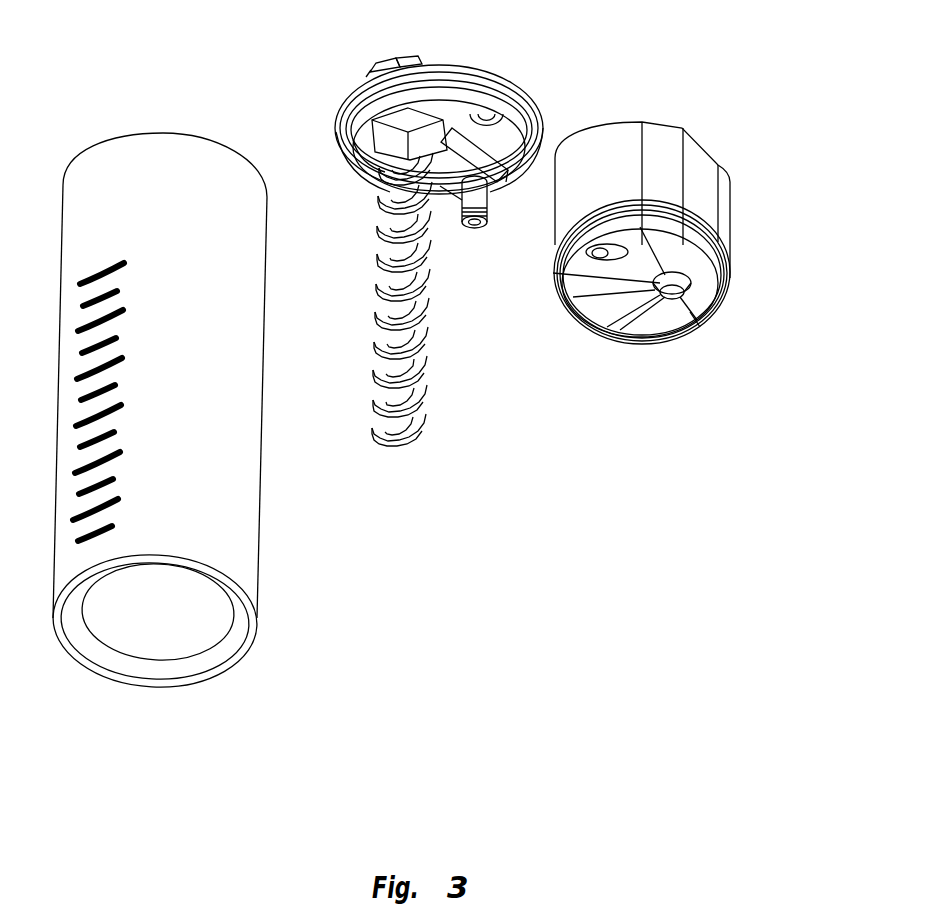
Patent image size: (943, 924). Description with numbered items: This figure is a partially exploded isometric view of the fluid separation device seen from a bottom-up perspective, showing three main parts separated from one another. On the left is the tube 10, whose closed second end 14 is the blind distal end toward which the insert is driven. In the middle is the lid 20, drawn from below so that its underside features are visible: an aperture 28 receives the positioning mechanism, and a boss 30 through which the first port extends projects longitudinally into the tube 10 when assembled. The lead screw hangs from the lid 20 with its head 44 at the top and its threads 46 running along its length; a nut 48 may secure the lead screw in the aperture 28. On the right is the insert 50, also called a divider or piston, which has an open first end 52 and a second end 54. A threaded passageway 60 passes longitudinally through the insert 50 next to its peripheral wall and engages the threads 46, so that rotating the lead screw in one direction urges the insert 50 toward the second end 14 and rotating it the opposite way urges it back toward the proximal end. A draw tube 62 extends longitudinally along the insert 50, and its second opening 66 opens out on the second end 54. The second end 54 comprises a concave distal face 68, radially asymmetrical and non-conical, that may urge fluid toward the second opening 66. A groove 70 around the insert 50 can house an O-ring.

The tube 10 is at (187, 723).
The second end 14 is at (193, 620).
The lid 20 is at (487, 78).
The aperture 28 is at (503, 128).
The boss 30 is at (488, 203).
The head 44 is at (396, 60).
The threads 46 is at (415, 357).
The nut 48 is at (375, 140).
The insert 50 is at (637, 426).
The first end 52 is at (680, 128).
The second end 54 is at (660, 340).
The passageway 60 is at (600, 262).
The draw tube 62 is at (690, 295).
The second opening 66 is at (690, 312).
The distal face 68 is at (627, 300).
The groove 70 is at (717, 243).